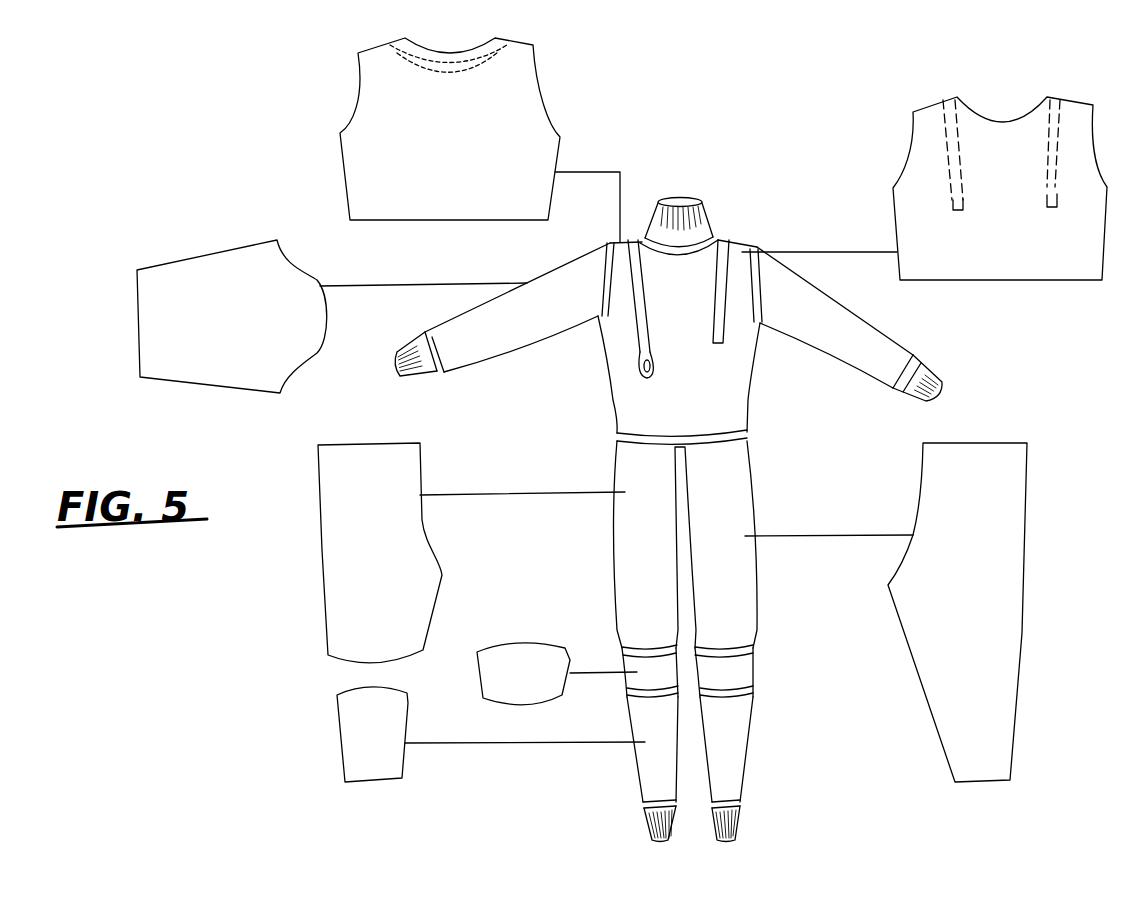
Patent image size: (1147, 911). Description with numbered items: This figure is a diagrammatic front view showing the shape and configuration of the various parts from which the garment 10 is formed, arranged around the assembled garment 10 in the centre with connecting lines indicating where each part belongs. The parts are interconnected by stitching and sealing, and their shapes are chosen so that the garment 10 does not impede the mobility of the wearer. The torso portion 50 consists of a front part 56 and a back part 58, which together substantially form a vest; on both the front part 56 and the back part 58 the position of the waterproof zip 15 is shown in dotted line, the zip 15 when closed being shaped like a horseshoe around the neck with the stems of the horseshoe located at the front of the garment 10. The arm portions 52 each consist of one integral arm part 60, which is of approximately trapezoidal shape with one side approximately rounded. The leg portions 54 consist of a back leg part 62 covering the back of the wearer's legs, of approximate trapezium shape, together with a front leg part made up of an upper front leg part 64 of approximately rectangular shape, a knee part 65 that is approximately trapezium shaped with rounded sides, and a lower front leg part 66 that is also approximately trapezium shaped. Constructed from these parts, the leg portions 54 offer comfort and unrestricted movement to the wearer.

The garment 10 is at (693, 507).
The waterproof zip 15 is at (722, 236).
The torso portion 50 is at (767, 404).
The arm portions 52 is at (532, 350).
The leg portions 54 is at (765, 506).
The front part 56 is at (927, 160).
The back part 58 is at (535, 118).
The arm part 60 is at (190, 272).
The back leg part 62 is at (1000, 645).
The upper front leg part 64 is at (330, 565).
The knee part 65 is at (522, 650).
The lower front leg part 66 is at (347, 730).